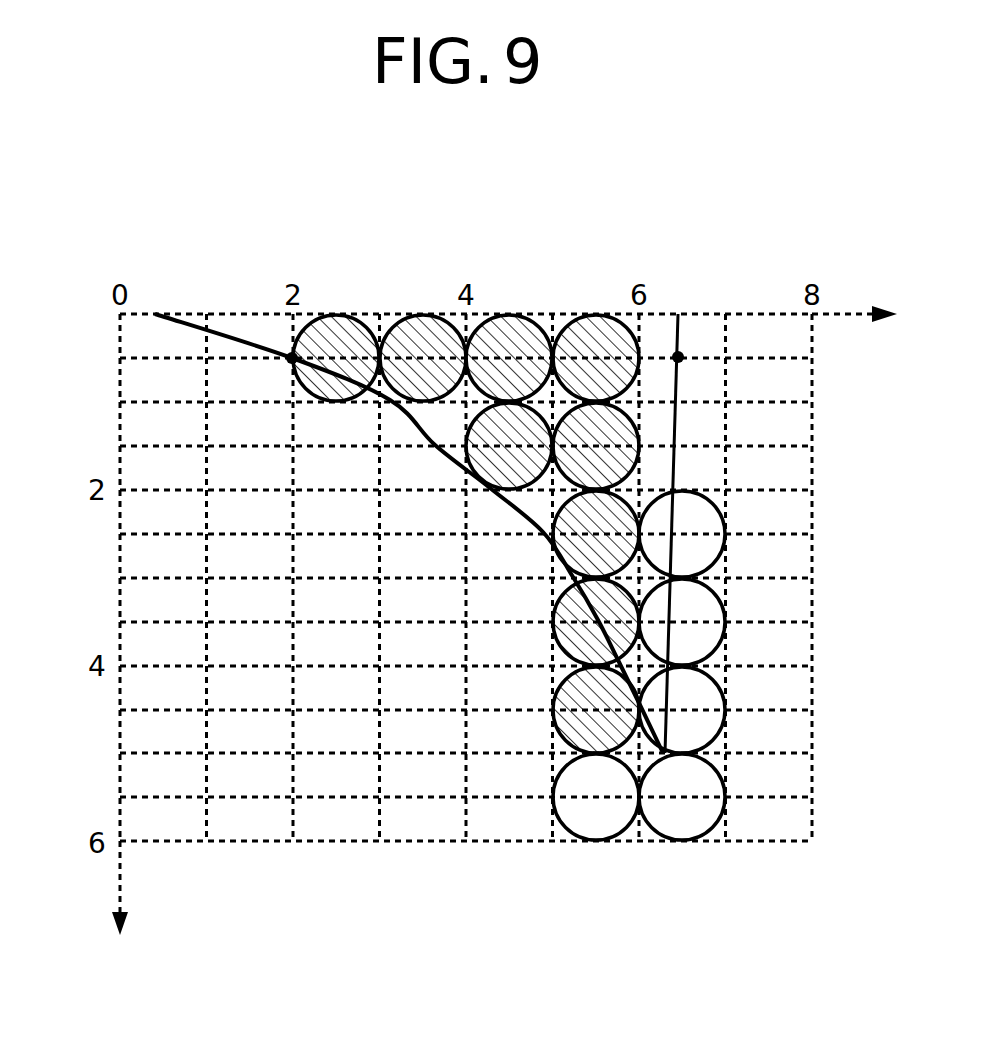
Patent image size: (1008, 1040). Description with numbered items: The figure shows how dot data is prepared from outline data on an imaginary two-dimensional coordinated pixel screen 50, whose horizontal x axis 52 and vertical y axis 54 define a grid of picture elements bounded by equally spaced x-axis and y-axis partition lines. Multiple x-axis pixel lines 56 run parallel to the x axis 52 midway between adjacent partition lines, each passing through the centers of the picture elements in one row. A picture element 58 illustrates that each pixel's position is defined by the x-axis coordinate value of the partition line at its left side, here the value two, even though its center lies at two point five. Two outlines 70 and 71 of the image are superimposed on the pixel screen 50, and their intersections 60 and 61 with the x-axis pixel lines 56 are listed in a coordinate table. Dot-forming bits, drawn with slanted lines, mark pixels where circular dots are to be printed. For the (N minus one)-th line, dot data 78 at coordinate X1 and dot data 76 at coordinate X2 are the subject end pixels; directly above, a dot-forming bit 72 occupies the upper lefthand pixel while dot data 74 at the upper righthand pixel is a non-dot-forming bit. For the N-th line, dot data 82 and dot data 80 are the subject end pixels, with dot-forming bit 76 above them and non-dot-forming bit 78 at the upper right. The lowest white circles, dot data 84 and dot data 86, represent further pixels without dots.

The pixel screen 50 is at (815, 420).
The x axis 52 is at (880, 322).
The y axis 54 is at (130, 922).
The x-axis pixel lines 56 is at (150, 355).
The picture element 58 is at (354, 318).
The intersection 60 is at (290, 354).
The intersection 61 is at (680, 354).
The outline 70 is at (226, 332).
The outline 71 is at (674, 318).
The dot-forming bit 72 is at (553, 545).
The dot data 74 is at (726, 545).
The dot data 76 is at (553, 618).
The dot data 78 is at (726, 612).
The dot data 80 is at (553, 708).
The dot data 82 is at (726, 702).
The outside pixel 84 is at (553, 795).
The outside pixel 86 is at (726, 798).